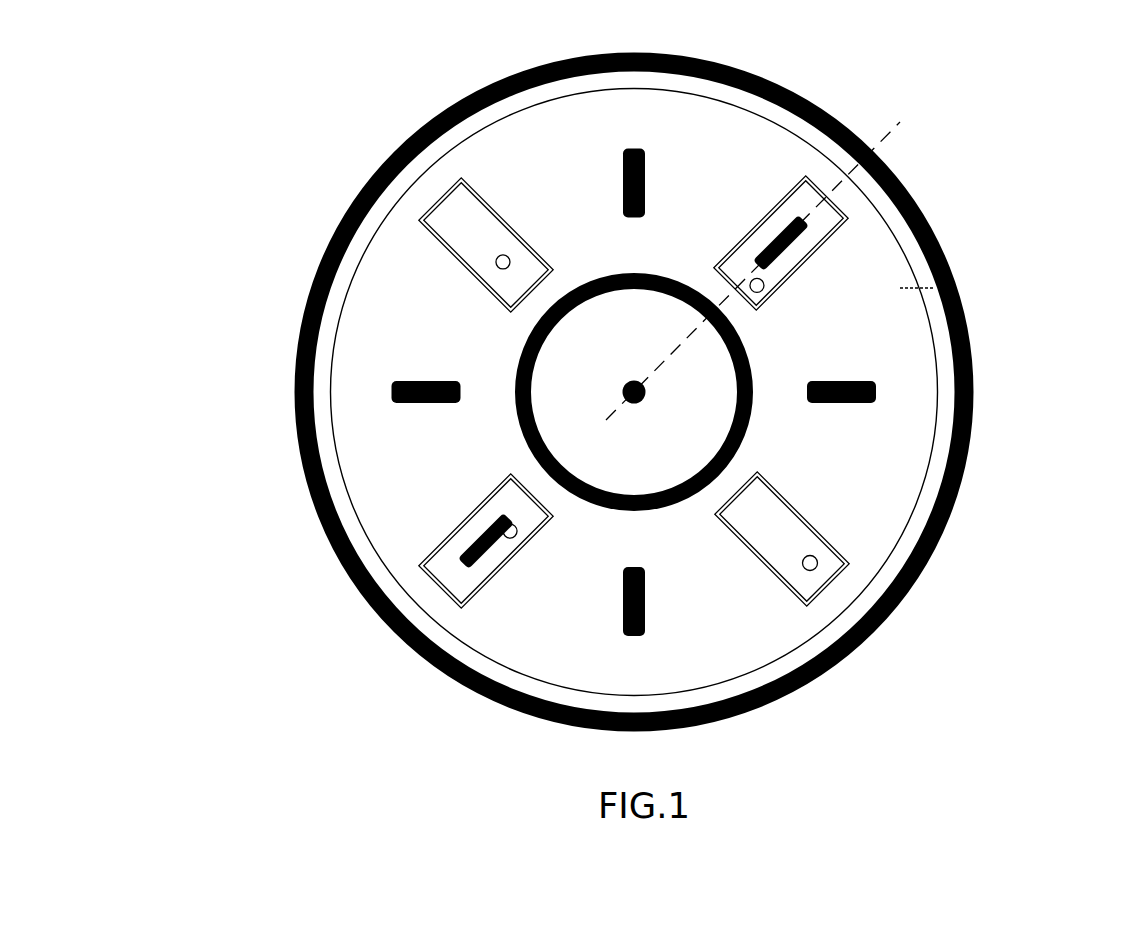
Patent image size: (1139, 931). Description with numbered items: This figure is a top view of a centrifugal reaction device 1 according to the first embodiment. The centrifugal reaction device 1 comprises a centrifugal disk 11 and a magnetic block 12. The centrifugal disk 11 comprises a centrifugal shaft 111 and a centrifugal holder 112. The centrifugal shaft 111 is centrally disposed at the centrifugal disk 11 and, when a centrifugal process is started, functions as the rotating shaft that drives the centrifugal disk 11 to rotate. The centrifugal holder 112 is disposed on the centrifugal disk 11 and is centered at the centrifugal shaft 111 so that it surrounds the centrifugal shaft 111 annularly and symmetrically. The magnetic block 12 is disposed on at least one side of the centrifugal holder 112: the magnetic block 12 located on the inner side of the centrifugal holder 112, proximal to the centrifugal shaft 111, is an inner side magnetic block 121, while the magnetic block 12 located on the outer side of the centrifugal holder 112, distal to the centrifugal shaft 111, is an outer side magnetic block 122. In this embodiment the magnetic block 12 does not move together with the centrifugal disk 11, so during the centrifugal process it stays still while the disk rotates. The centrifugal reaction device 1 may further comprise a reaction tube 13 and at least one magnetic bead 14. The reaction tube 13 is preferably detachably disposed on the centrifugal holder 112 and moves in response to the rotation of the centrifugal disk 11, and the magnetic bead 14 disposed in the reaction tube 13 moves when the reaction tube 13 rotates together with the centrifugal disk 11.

The centrifugal reaction device 1 is at (287, 130).
The centrifugal disk 11 is at (957, 284).
The centrifugal shaft 111 is at (832, 351).
The centrifugal holder 112 is at (846, 226).
The magnetic block 12 is at (1054, 403).
The inner side magnetic block 121 is at (781, 392).
The outer side magnetic block 122 is at (963, 473).
The reaction tube 13 is at (805, 177).
The magnetic bead 14 is at (815, 568).